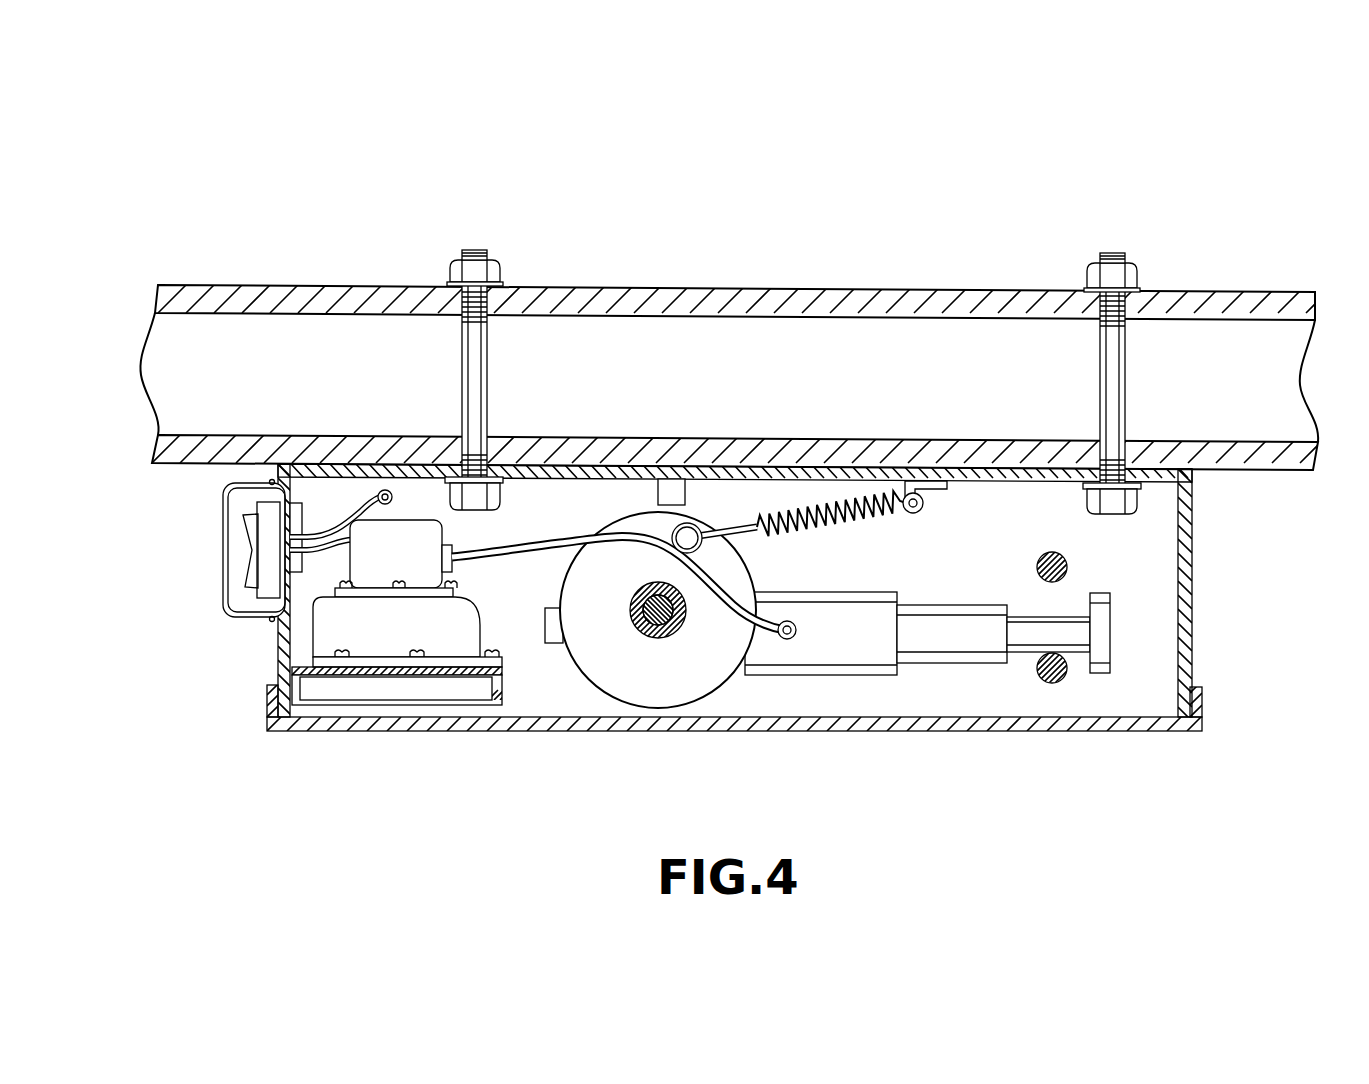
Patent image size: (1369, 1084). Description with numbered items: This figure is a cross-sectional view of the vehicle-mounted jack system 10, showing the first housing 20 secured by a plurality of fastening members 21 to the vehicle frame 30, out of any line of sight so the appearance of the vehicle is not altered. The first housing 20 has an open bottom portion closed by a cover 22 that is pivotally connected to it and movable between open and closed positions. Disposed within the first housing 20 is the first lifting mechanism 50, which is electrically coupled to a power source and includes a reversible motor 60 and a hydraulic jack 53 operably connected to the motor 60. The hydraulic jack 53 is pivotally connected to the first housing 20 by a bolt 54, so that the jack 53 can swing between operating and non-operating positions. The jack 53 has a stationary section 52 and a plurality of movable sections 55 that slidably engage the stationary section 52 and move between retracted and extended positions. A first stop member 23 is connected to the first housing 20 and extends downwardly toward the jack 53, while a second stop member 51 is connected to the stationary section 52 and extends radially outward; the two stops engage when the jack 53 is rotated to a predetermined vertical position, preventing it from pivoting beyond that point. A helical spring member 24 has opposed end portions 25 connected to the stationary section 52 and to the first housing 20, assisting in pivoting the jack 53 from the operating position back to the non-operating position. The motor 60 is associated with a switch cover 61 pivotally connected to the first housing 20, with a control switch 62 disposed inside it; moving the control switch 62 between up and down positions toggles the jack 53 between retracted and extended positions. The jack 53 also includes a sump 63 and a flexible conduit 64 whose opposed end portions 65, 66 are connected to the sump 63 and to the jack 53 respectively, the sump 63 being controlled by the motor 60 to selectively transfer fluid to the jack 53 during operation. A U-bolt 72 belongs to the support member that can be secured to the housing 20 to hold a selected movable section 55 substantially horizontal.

The system 10 is at (267, 151).
The first housing 20 is at (581, 465).
The fastening members 21 is at (477, 258).
The cover 22 is at (1177, 733).
The first stop member 23 is at (665, 496).
The helical spring member 24 is at (831, 497).
The opposed end portions 25 is at (697, 527).
The frame 30 is at (277, 289).
The first lifting mechanism 50 is at (632, 683).
The second stop member 51 is at (553, 628).
The stationary section 52 is at (600, 667).
The hydraulic jack 53 is at (773, 657).
The bolt 54 is at (663, 623).
The movable sections 55 is at (870, 665).
The reversible motor 60 is at (380, 637).
The switch cover 61 is at (223, 492).
The control switch 62 is at (243, 530).
The sump 63 is at (367, 563).
The flexible conduit 64 is at (556, 543).
The end portion 65 is at (463, 557).
The end portion 66 is at (790, 639).
The U-bolt 72 is at (1067, 563).